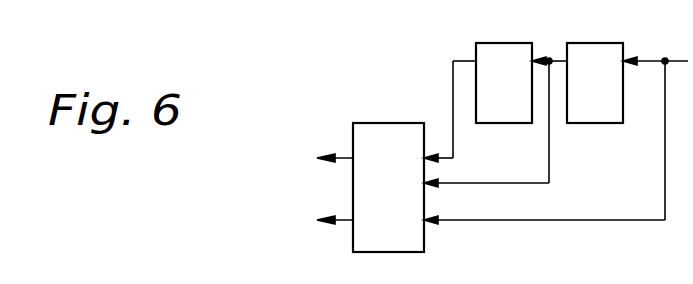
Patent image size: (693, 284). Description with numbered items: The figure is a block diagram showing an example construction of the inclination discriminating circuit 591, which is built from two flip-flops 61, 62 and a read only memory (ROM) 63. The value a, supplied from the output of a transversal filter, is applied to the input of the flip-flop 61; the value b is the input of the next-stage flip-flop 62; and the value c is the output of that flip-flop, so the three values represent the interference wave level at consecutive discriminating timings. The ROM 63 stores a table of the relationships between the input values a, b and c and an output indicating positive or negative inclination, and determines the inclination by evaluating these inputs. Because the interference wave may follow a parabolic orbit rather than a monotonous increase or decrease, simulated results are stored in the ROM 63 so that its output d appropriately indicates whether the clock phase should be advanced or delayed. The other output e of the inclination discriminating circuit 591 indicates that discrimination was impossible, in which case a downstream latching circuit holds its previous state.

The inclination discriminating circuit 591 is at (406, 57).
The flip-flop 61 is at (591, 41).
The flip-flop 62 is at (508, 41).
The read only memory (ROM) 63 is at (389, 72).